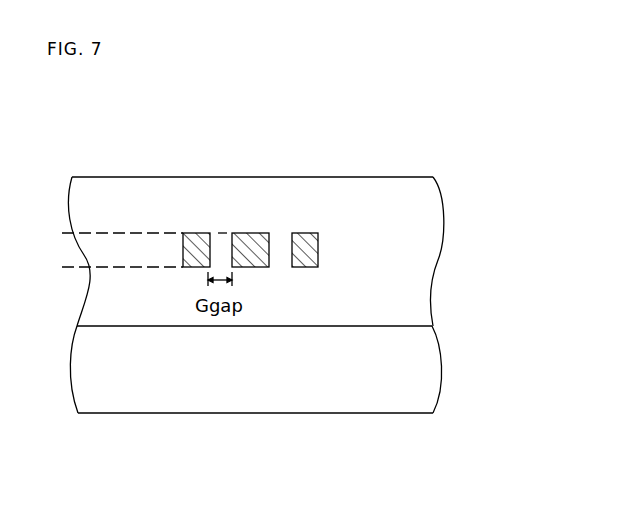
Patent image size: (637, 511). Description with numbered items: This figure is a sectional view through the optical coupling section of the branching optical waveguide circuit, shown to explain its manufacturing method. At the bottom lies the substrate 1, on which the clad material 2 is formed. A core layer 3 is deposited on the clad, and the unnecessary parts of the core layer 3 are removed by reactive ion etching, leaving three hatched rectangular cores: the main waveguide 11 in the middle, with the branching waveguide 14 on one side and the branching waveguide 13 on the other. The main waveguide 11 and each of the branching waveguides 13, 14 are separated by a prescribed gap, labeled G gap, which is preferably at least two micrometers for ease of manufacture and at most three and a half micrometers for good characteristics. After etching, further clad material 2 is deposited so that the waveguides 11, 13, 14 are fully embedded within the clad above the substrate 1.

The substrate 1 is at (433, 363).
The clad material 2 is at (420, 258).
The core layer 3 is at (59, 240).
The main waveguide 11 is at (248, 233).
The branching waveguide 13 is at (303, 233).
The branching waveguide 14 is at (197, 233).